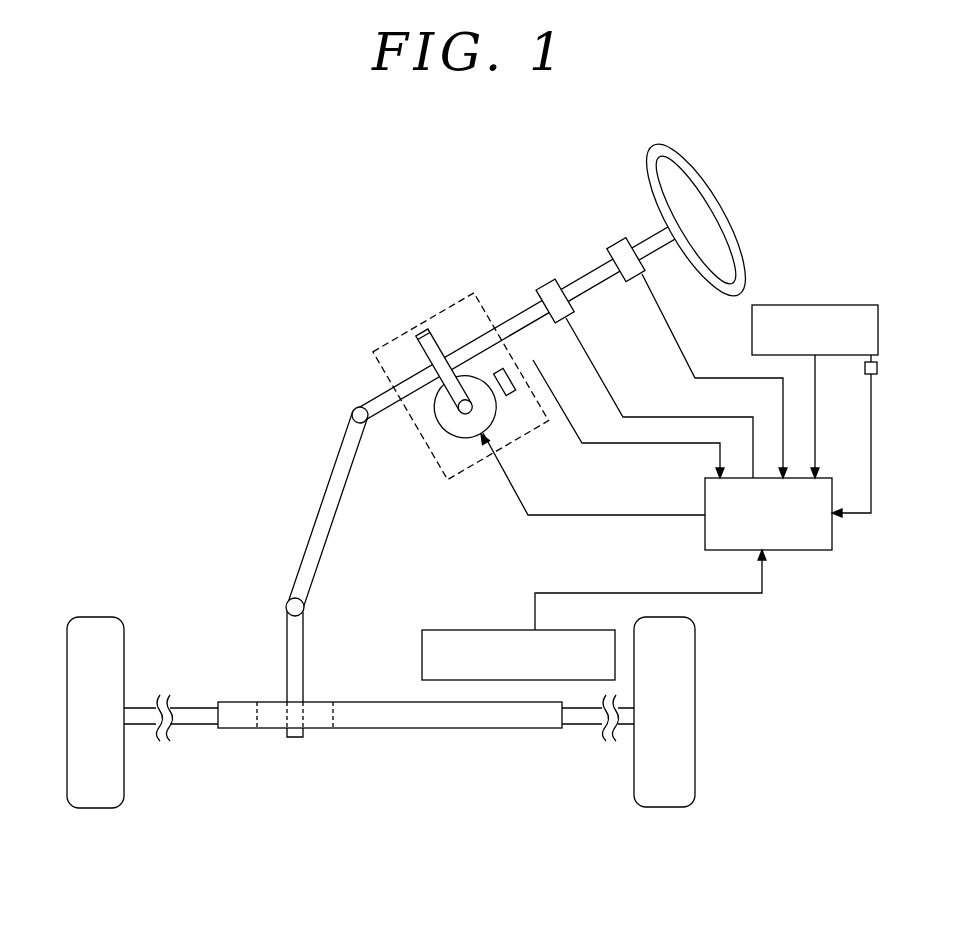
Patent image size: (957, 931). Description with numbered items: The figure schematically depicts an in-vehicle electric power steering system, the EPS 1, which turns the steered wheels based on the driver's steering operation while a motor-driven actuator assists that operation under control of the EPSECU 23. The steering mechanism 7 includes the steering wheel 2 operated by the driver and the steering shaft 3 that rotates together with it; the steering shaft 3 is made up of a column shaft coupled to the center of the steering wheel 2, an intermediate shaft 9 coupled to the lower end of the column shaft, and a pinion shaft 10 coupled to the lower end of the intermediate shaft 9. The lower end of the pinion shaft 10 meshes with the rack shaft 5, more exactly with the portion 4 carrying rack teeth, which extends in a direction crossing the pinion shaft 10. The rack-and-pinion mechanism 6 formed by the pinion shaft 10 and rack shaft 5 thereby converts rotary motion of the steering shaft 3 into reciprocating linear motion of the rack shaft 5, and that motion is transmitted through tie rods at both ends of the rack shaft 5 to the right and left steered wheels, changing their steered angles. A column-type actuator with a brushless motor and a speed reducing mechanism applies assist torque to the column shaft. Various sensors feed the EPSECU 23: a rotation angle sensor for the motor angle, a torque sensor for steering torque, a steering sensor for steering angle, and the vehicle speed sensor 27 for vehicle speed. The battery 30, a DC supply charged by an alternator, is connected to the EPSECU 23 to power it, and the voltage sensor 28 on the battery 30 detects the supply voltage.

The electric power steering system 1 is at (266, 333).
The steering wheel 2 is at (720, 212).
The steering shaft 3 is at (306, 401).
The portion with rack teeth 4 is at (275, 728).
The rack shaft 5 is at (359, 729).
The rack-and-pinion mechanism 6 is at (325, 690).
The steering mechanism 7 is at (790, 157).
The intermediate shaft 9 is at (324, 501).
The pinion shaft 10 is at (283, 625).
The EPSECU 23 is at (835, 533).
The vehicle speed sensor 27 is at (493, 630).
The voltage sensor 28 is at (879, 366).
The battery 30 is at (880, 327).